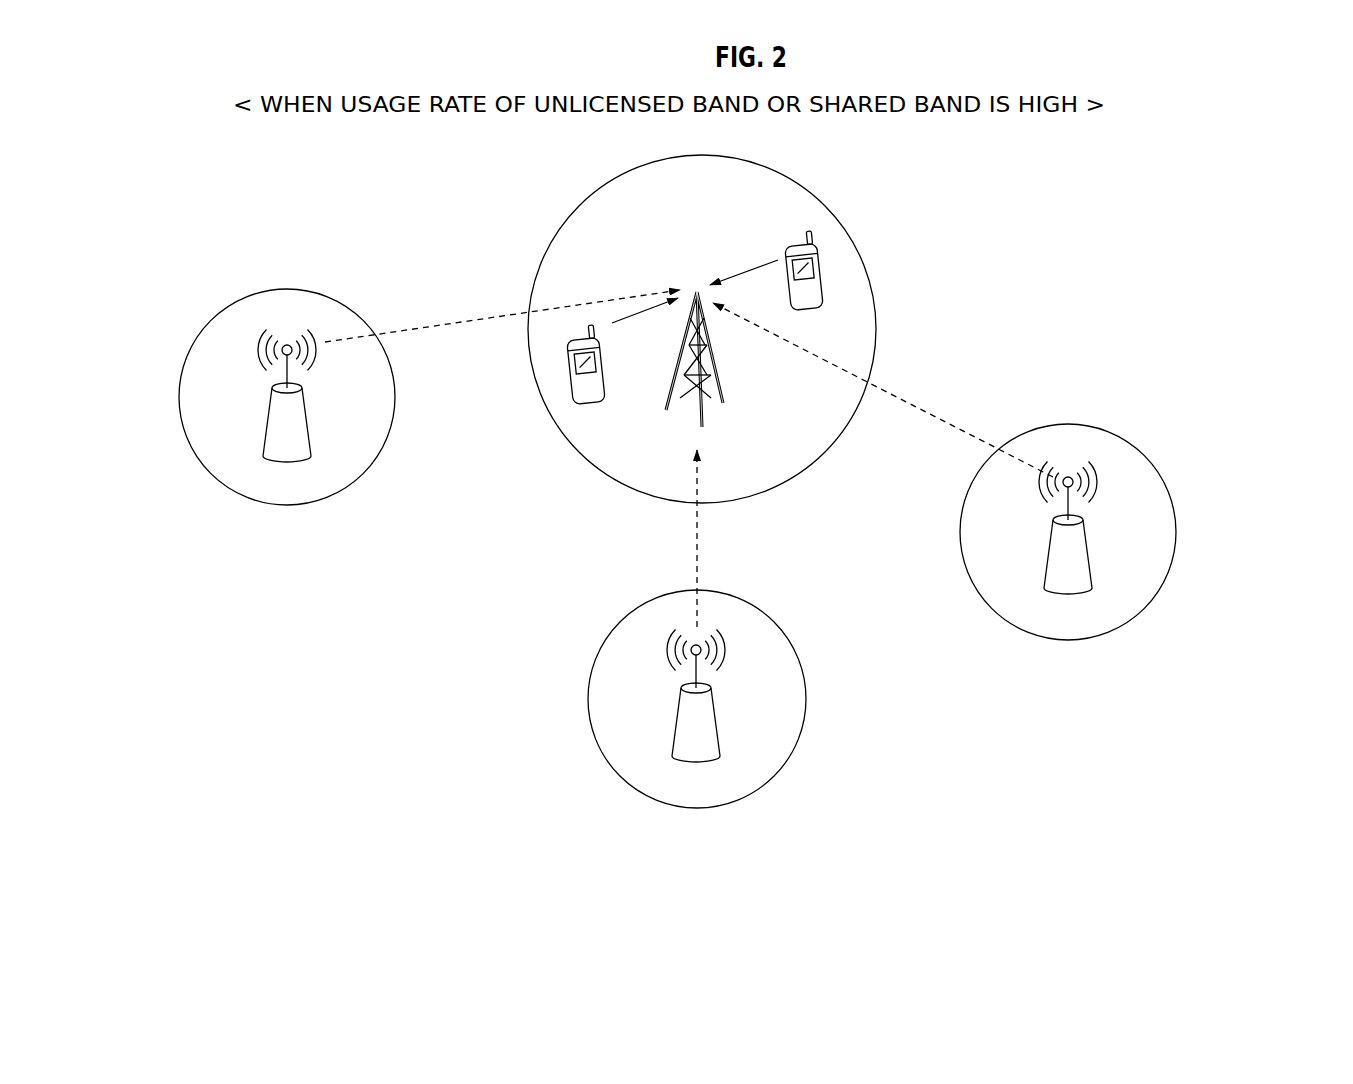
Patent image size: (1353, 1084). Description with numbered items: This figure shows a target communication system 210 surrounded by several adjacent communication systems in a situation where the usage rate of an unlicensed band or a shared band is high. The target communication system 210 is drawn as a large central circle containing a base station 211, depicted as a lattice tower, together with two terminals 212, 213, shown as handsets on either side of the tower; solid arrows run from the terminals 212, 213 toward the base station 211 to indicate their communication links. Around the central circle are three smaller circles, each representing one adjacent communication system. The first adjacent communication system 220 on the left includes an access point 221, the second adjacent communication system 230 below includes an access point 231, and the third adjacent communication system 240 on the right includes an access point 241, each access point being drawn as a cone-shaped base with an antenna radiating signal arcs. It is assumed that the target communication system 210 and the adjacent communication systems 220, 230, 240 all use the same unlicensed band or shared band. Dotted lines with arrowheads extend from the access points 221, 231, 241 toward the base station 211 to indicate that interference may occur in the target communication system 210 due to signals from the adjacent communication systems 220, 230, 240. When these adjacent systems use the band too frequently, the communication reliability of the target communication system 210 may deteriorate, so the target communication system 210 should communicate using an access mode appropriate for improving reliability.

The target communication system 210 is at (580, 203).
The base station 211 is at (723, 392).
The terminal 212 is at (570, 357).
The terminal 213 is at (820, 262).
The adjacent communication system (1) 220 is at (288, 508).
The access point 221 is at (307, 417).
The adjacent communication system (2) 230 is at (588, 697).
The access point 231 is at (718, 717).
The adjacent communication system (3) 240 is at (1067, 423).
The access point 241 is at (1090, 550).